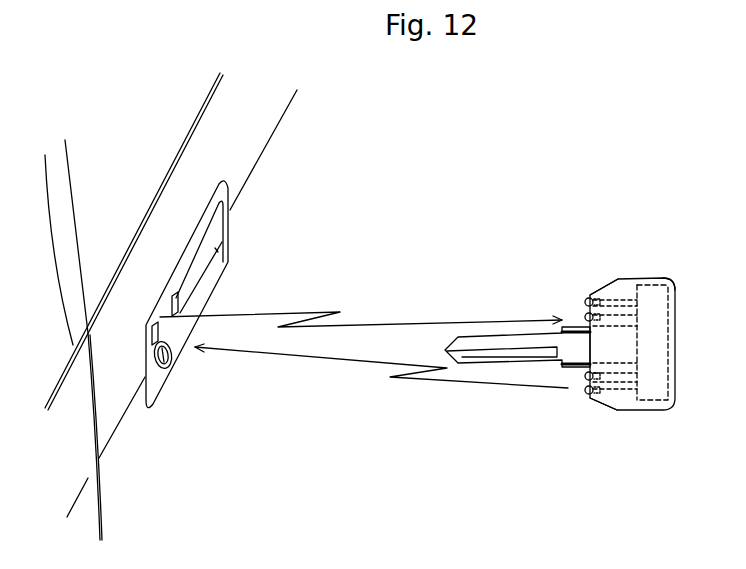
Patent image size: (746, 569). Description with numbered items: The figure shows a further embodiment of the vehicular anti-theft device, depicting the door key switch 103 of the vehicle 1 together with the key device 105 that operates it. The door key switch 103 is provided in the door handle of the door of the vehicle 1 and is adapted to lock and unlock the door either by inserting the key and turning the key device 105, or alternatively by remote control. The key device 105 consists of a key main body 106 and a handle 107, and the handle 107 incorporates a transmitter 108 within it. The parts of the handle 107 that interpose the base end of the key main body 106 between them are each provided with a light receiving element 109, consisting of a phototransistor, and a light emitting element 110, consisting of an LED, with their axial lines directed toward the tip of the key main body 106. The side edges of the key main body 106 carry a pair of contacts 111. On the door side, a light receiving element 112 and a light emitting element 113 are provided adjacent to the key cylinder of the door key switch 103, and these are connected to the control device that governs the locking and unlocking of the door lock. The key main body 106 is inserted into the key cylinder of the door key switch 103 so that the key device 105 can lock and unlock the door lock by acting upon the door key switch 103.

The vehicle 1 is at (310, 198).
The door key switch 103 is at (187, 370).
The key device 105 is at (626, 329).
The key main body 106 is at (501, 333).
The handle 107 is at (693, 276).
The transmitter 108 is at (667, 344).
The light receiving element 109 is at (587, 380).
The light emitting element 110 is at (592, 292).
The contacts 111 is at (577, 322).
The light receiving element 112 is at (154, 342).
The light emitting element 113 is at (170, 300).